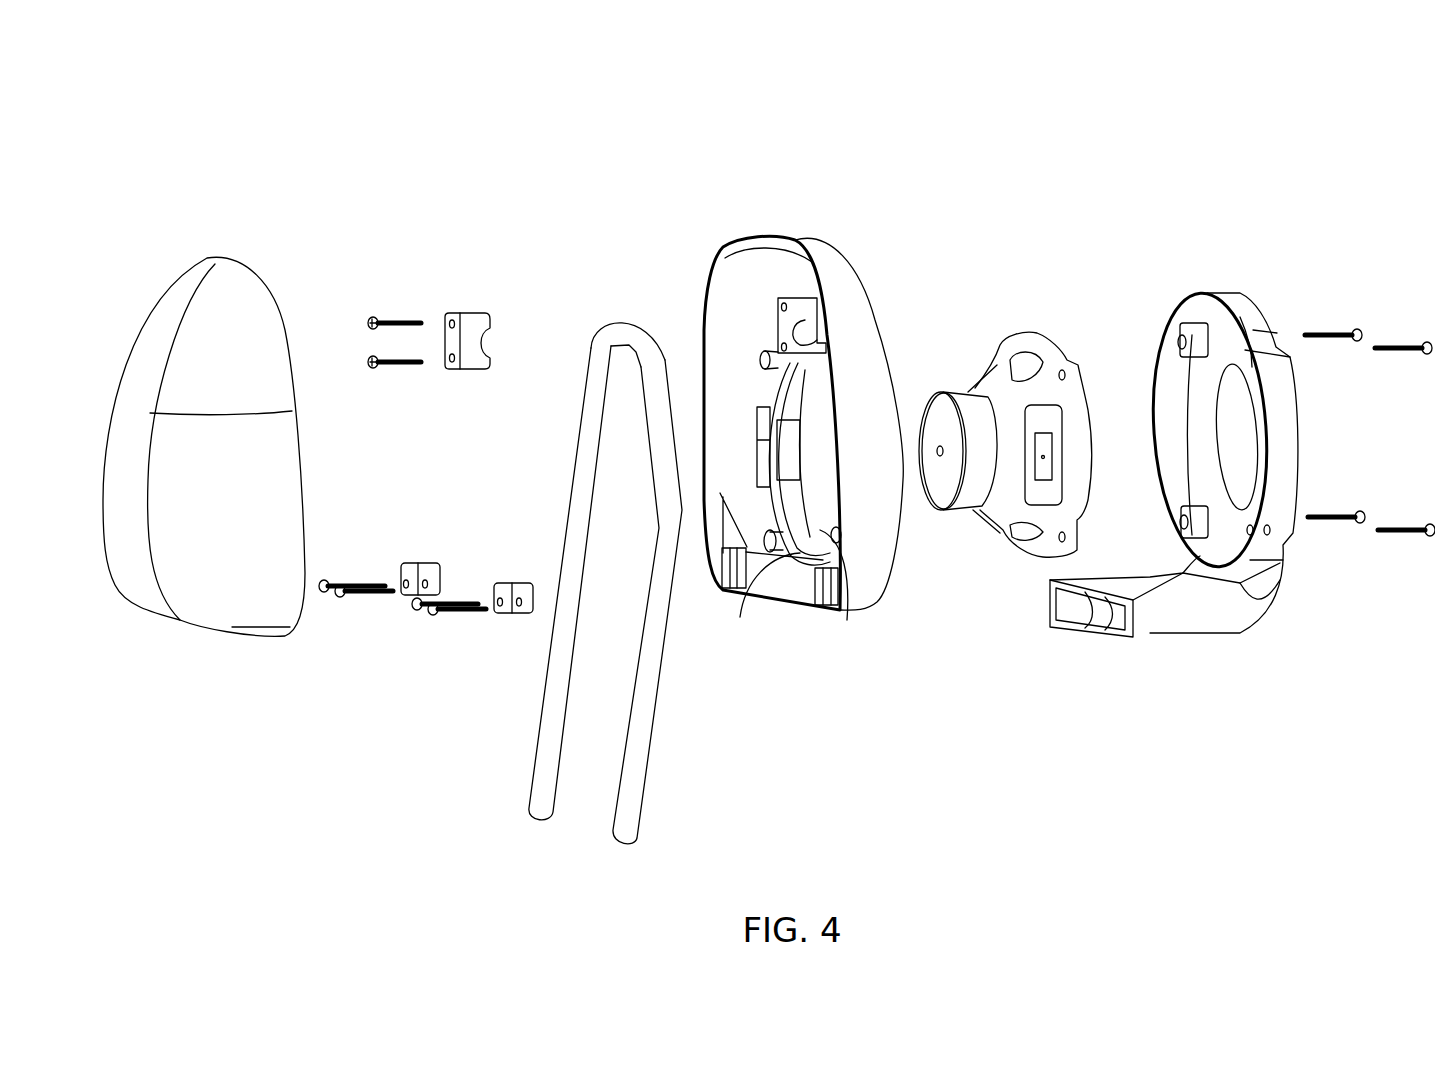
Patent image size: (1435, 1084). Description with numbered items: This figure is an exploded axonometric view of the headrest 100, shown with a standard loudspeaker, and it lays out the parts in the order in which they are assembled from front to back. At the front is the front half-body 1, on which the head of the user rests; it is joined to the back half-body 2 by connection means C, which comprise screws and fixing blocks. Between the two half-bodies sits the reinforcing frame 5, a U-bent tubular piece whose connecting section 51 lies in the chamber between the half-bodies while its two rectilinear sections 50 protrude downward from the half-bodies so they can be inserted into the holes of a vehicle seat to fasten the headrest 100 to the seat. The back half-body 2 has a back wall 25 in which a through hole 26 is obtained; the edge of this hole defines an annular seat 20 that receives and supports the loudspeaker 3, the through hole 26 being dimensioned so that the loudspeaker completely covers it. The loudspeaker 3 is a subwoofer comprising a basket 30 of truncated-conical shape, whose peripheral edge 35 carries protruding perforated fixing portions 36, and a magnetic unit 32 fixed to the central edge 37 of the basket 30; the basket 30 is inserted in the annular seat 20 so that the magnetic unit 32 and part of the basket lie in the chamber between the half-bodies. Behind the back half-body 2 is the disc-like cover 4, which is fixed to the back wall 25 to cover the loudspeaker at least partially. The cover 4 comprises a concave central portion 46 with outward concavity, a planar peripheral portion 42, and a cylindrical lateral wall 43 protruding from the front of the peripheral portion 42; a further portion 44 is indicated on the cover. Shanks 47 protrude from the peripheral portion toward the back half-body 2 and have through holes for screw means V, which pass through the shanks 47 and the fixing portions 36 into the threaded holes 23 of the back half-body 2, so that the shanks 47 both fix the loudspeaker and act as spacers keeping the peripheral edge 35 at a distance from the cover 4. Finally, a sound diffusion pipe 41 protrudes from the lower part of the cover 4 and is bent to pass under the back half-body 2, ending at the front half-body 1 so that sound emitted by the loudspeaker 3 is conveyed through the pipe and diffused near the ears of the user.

The headrest 100 is at (453, 167).
The front half-body 1 is at (165, 278).
The connection means C is at (510, 583).
The reinforcing frame 5 is at (575, 498).
The connecting section 51 is at (625, 333).
The rectilinear sections 50 is at (538, 776).
The back half-body 2 is at (798, 450).
The annular seat 20 is at (797, 427).
The through hole 26 is at (773, 530).
The threaded holes 23 is at (836, 545).
The back wall 25 is at (897, 565).
The loudspeaker 3 is at (1013, 407).
The magnetic unit 32 is at (943, 385).
The central edge 37 is at (975, 387).
The peripheral edge 35 is at (1089, 400).
The perforated fixing portions 36 is at (1067, 537).
The basket 30 is at (995, 517).
The cover 4 is at (1229, 441).
The annular rim 44 is at (1157, 385).
The planar peripheral portion 42 is at (1228, 340).
The cylindrical lateral wall 43 is at (1287, 420).
The concave central portion 46 is at (1252, 470).
The sound diffusion pipe 41 is at (1155, 642).
The shanks 47 is at (1228, 530).
The screw means V is at (1400, 333).